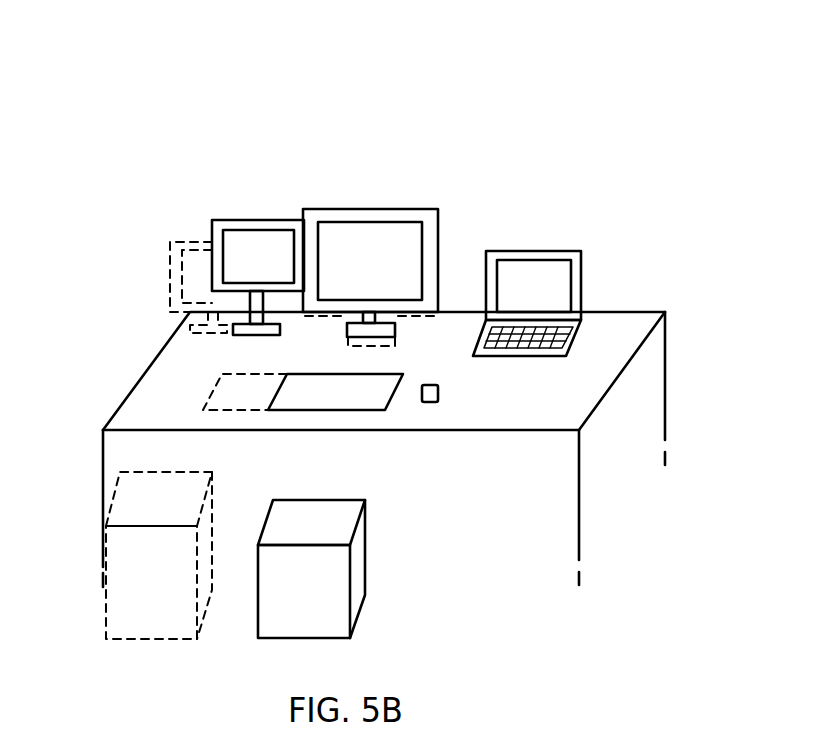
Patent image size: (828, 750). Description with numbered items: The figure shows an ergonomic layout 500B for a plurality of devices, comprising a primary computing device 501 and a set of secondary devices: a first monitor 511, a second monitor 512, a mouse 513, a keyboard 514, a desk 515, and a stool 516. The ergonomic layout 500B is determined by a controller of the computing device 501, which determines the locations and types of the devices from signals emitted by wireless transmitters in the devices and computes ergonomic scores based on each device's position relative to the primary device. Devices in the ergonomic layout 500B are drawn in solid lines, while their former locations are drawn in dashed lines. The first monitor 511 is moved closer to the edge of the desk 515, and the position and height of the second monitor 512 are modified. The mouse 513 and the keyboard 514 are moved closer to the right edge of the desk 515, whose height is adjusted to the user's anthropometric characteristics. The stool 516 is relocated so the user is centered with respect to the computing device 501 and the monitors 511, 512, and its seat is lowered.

The ergonomic layout 500B is at (351, 172).
The computing device 501 is at (581, 251).
The first monitor 511 is at (439, 225).
The second monitor 512 is at (212, 232).
The mouse 513 is at (438, 393).
The keyboard 514 is at (320, 410).
The desk 515 is at (597, 412).
The stool 516 is at (365, 552).